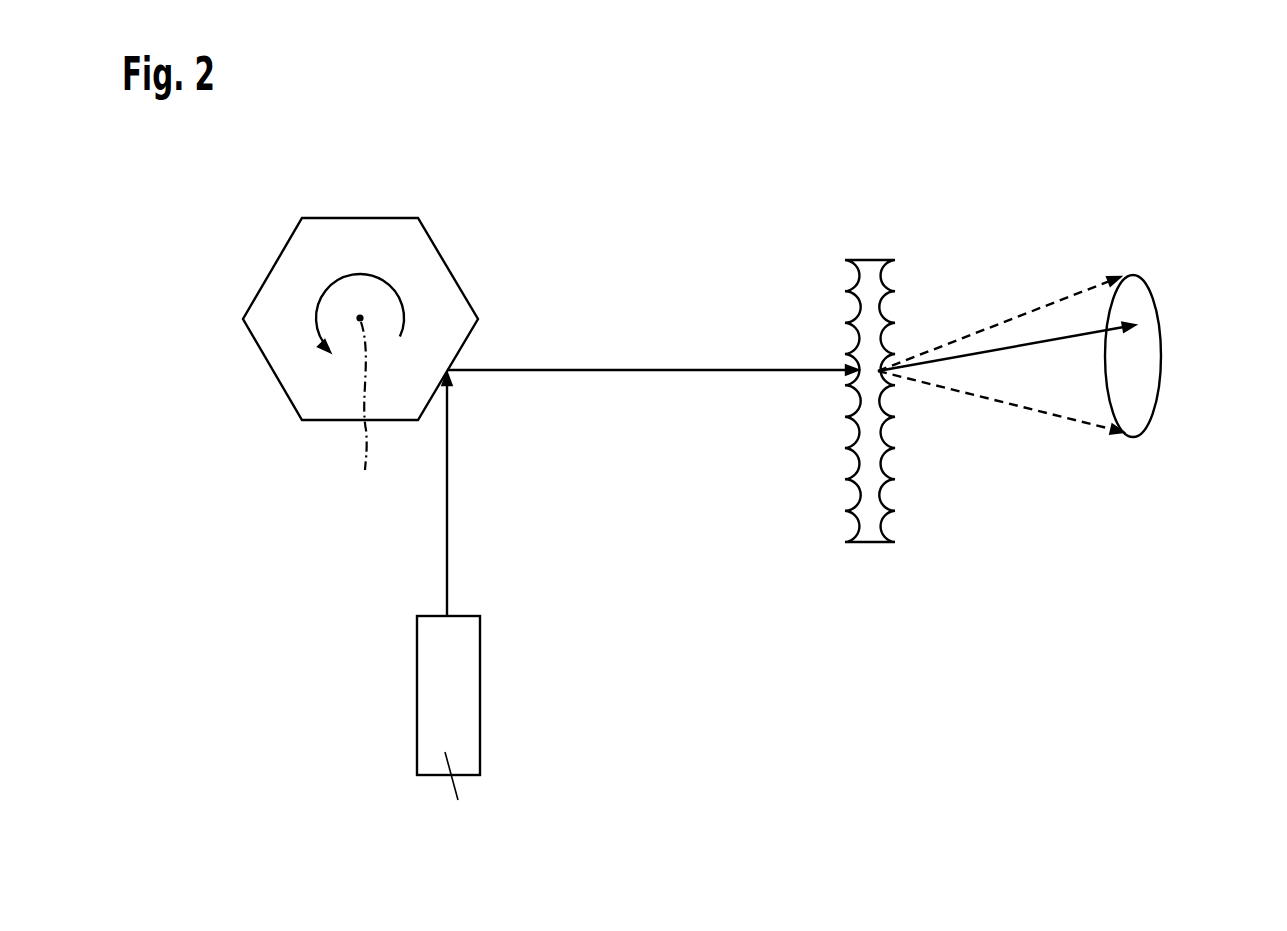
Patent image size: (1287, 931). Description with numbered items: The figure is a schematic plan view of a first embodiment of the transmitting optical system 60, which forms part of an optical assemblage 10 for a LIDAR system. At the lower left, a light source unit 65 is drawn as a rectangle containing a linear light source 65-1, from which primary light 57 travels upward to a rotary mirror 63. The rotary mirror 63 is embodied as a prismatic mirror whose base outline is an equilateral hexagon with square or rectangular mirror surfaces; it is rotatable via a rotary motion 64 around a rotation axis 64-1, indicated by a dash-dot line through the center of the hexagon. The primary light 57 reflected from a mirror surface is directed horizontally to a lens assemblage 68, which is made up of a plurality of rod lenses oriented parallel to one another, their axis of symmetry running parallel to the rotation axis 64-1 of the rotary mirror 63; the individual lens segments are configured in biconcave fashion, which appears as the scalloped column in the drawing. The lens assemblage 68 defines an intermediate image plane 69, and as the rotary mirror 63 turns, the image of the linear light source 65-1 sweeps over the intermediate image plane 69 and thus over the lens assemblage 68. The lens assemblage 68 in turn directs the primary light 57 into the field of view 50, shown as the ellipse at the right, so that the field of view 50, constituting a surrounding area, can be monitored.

The optical assemblage 10 is at (736, 453).
The transmitting optical system 60 is at (1168, 143).
The rotary mirror 63 is at (281, 368).
The rotary motion 64 is at (362, 275).
The rotation axis 64-1 is at (372, 411).
The primary light 57 is at (448, 513).
The lens assemblage 68 is at (870, 258).
The intermediate image plane 69 is at (823, 359).
The field of view 50 is at (1090, 262).
The light source unit 65 is at (468, 717).
The linear light source 65-1 is at (432, 687).